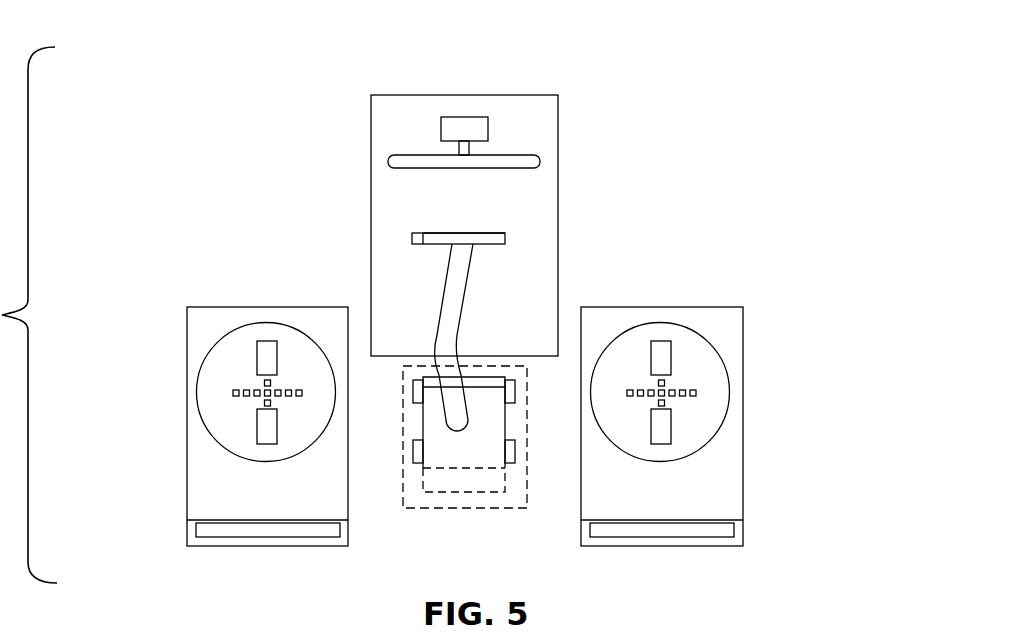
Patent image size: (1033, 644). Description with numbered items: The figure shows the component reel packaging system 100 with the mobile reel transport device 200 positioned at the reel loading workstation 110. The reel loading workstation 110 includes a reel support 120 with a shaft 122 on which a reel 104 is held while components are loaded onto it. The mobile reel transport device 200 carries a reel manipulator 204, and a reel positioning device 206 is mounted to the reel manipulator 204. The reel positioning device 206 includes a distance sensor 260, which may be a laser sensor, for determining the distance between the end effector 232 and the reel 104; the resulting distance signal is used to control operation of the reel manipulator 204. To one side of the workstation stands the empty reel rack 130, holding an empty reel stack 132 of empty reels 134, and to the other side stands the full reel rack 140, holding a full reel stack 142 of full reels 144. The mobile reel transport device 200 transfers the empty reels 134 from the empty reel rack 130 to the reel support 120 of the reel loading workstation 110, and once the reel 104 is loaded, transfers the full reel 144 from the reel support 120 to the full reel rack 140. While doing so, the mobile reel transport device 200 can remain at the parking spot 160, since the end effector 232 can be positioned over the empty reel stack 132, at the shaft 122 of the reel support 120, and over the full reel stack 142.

The component reel packaging system 100 is at (797, 50).
The reel loading workstation 110 is at (412, 83).
The reel support 120 is at (469, 111).
The shaft 122 is at (469, 150).
The reel 104 is at (525, 155).
The distance sensor 260 is at (418, 232).
The end effector 232 is at (488, 232).
The reel positioning device 206 is at (453, 221).
The reel manipulator 204 is at (469, 311).
The mobile reel transport device 200 is at (421, 484).
The parking spot 160 is at (477, 510).
The full reel rack 140 is at (195, 419).
The full reel stack 142 is at (209, 341).
The full reel 144 is at (215, 415).
The empty reel rack 130 is at (734, 419).
The empty reel stack 132 is at (719, 341).
The empty reel 134 is at (715, 415).